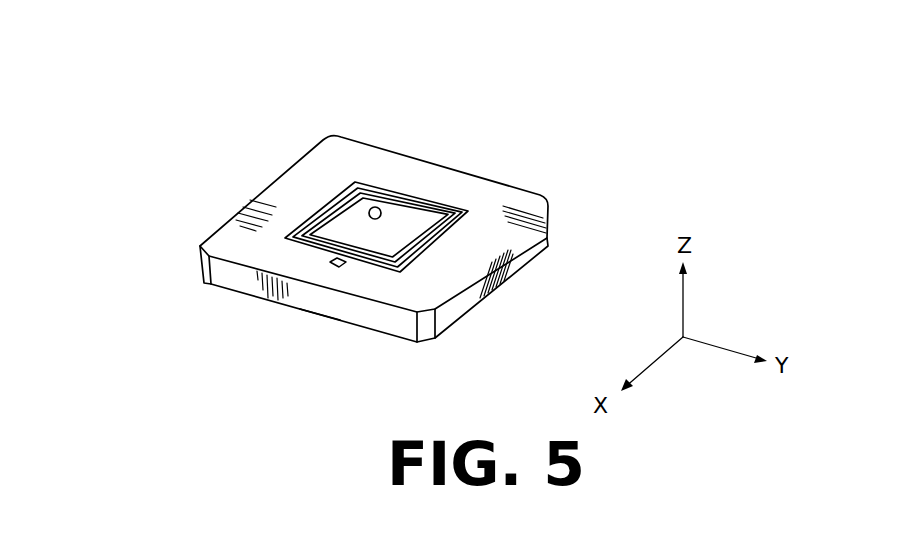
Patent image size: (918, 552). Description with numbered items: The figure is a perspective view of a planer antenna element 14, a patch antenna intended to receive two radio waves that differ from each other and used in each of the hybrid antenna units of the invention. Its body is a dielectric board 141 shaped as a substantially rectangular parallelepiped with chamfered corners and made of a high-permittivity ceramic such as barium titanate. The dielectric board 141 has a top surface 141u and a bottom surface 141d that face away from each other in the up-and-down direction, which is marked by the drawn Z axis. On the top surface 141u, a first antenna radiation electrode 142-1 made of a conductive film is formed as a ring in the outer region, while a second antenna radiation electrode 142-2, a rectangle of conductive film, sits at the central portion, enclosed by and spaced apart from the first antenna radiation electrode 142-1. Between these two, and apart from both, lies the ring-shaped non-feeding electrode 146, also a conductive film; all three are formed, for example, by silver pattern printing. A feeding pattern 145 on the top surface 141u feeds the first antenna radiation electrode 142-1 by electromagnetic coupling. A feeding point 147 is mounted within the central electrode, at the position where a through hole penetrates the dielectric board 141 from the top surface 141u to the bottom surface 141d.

The planer antenna element 14 is at (402, 116).
The dielectric board 141 is at (238, 283).
The top surface 141u is at (283, 192).
The bottom surface 141d is at (332, 321).
The first antenna radiation electrode 142-1 is at (428, 252).
The second antenna radiation electrode 142-2 is at (408, 218).
The feeding pattern 145 is at (327, 266).
The non-feeding electrode 146 is at (445, 237).
The feeding point 147 is at (374, 206).